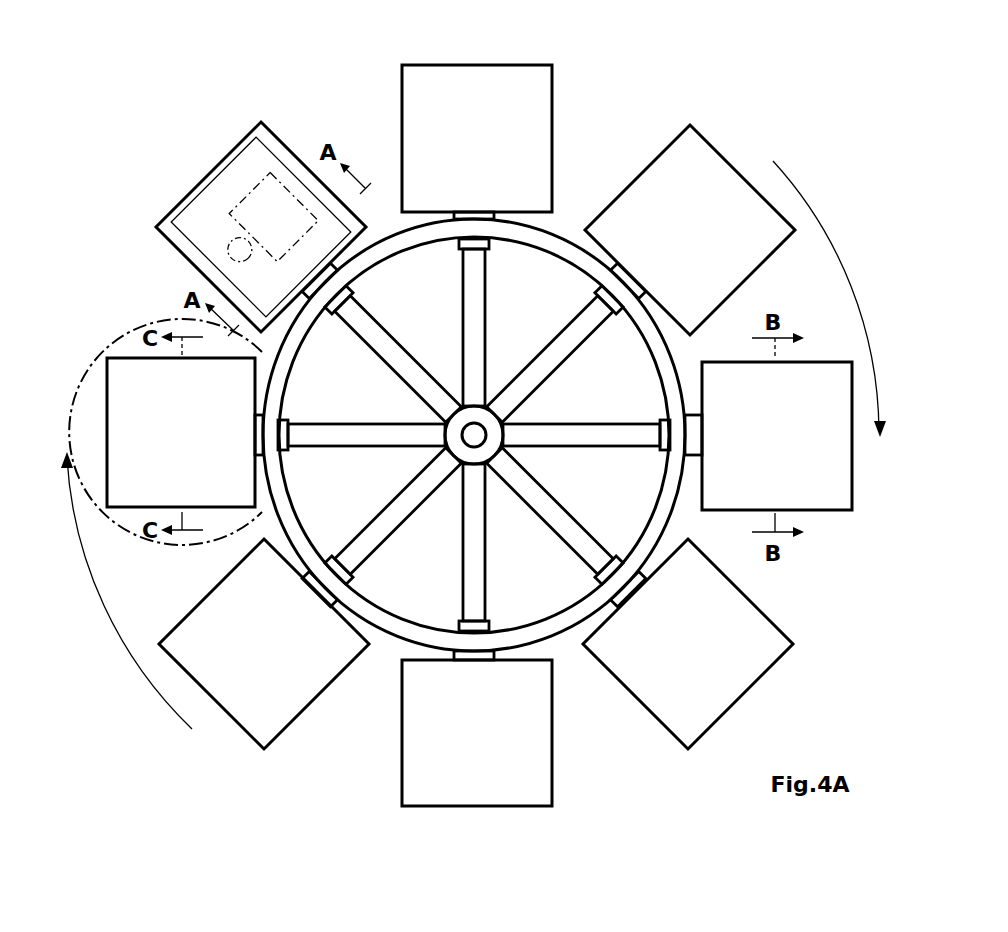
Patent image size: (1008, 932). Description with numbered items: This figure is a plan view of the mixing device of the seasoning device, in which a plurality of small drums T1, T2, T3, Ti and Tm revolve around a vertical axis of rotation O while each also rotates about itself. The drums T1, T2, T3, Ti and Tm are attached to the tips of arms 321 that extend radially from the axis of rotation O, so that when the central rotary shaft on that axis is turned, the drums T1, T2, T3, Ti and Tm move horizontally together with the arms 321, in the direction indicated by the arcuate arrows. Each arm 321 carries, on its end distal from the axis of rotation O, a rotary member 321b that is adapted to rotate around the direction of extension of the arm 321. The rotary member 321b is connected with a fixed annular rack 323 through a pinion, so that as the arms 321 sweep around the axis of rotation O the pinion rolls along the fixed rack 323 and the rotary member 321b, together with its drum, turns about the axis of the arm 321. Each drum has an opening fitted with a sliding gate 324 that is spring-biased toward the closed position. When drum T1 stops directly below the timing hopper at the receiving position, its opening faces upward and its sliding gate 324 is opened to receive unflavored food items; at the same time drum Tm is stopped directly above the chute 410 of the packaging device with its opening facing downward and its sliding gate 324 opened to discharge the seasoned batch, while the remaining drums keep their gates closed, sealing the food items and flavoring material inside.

The sliding gate 324 is at (178, 245).
The chute 410 is at (108, 343).
The arm 321 is at (466, 347).
The rotary member 321b is at (488, 628).
The fixed annular rack 323 is at (393, 626).
The axis of rotation O is at (468, 437).
The drum T1 is at (229, 207).
The drum T2 is at (520, 86).
The drum T3 is at (705, 152).
The drum Ti is at (823, 495).
The drum Tm is at (121, 498).